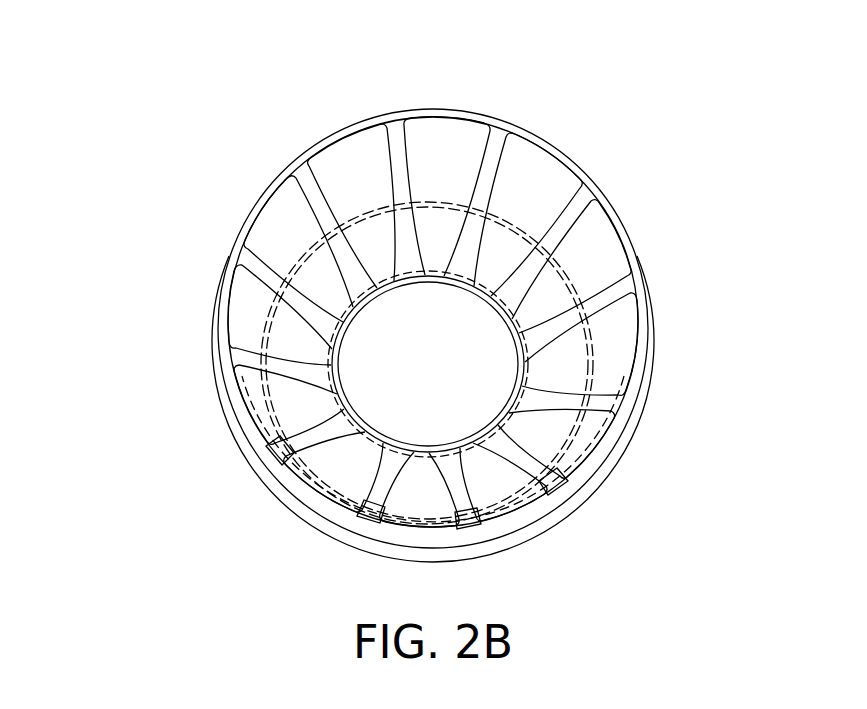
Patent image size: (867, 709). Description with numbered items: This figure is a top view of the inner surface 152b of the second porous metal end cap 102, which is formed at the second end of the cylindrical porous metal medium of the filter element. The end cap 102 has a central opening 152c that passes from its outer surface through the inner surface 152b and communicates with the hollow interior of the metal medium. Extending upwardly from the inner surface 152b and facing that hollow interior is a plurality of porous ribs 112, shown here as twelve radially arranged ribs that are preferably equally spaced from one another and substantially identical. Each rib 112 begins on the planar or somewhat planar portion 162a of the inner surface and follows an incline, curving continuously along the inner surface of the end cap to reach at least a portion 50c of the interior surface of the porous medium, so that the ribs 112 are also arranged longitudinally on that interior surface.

The second porous metal end cap 102 is at (680, 366).
The central opening 152c is at (372, 386).
The porous rib 112 is at (563, 241).
The portion of the interior surface of the porous medium 50c is at (545, 175).
The inner surface of the second end cap 152b is at (318, 280).
The planar portion of the inner surface 162a is at (283, 346).